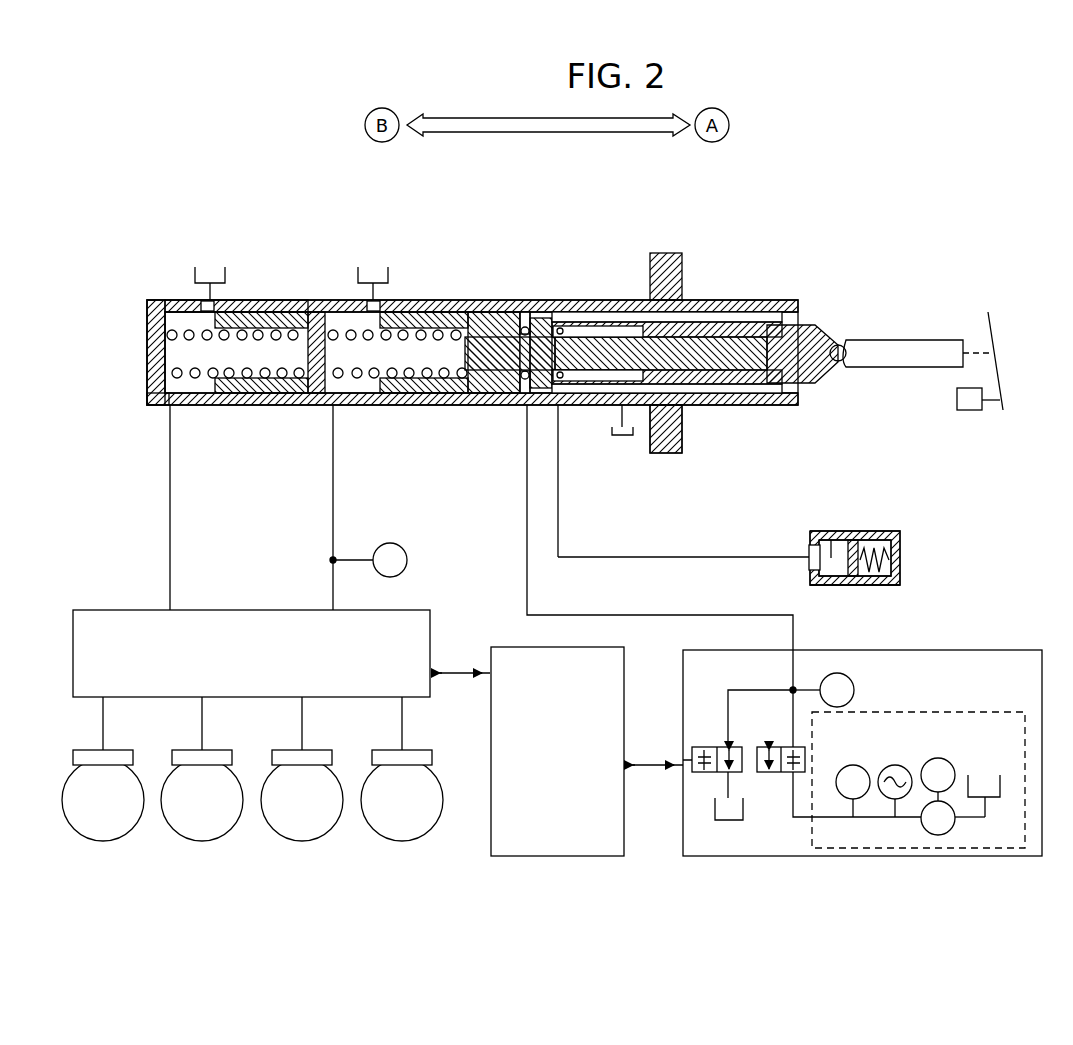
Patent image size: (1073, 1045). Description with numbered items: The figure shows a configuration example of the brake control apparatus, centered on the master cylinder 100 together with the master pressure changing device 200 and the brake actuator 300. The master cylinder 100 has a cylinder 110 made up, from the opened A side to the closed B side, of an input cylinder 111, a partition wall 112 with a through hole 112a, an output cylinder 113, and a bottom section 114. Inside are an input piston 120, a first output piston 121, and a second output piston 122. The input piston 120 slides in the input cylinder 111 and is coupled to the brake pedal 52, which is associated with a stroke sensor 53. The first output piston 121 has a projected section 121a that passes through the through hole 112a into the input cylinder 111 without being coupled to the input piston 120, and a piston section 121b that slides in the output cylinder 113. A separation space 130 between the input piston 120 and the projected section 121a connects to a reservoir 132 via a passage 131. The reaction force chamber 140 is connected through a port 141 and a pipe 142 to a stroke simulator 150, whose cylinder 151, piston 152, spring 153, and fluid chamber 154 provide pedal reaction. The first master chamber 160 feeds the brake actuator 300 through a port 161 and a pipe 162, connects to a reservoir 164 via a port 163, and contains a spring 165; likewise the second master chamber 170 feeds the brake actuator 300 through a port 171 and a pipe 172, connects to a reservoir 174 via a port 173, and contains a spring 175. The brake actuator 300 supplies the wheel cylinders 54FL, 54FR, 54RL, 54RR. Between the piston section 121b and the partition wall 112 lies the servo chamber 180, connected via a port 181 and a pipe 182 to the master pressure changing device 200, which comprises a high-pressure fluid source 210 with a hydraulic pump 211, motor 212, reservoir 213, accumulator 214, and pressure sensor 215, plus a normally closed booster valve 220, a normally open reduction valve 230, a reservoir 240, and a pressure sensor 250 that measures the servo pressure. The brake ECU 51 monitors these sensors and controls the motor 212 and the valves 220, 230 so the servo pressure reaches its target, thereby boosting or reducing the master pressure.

The master cylinder 100 is at (628, 256).
The cylinder 110 is at (747, 297).
The input cylinder 111 is at (708, 304).
The partition wall 112 is at (545, 318).
The through hole 112a is at (567, 326).
The output cylinder 113 is at (340, 299).
The bottom section 114 is at (147, 358).
The input piston 120 is at (828, 336).
The first output piston 121 is at (628, 197).
The projected section 121a is at (608, 350).
The piston section 121b is at (482, 330).
The second output piston 122 is at (266, 299).
The separation space 130 is at (797, 310).
The passage 131 is at (683, 425).
The reservoir 132 is at (623, 434).
The reaction force chamber 140 is at (593, 406).
The port 141 is at (563, 406).
The pipe 142 is at (560, 536).
The stroke simulator 150 is at (900, 562).
The cylinder 151 is at (870, 585).
The piston 152 is at (853, 532).
The spring 153 is at (885, 532).
The fluid chamber 154 is at (822, 533).
The first master chamber 160 is at (447, 406).
The port 161 is at (343, 406).
The pipe 162 is at (333, 519).
The port 163 is at (390, 298).
The reservoir 164 is at (392, 268).
The spring 165 is at (400, 406).
The second master chamber 170 is at (240, 406).
The port 171 is at (158, 406).
The pipe 172 is at (170, 525).
The port 173 is at (200, 300).
The reservoir 174 is at (197, 268).
The spring 175 is at (287, 406).
The servo chamber 180 is at (487, 406).
The port 181 is at (513, 406).
The pipe 182 is at (527, 574).
The master pressure changing device 200 is at (822, 857).
The high-pressure fluid source 210 is at (965, 712).
The hydraulic pump 211 is at (938, 836).
The motor 212 is at (926, 764).
The reservoir 213 is at (983, 777).
The accumulator 214 is at (897, 763).
The pressure sensor 215 is at (851, 765).
The booster valve 220 is at (777, 774).
The reduction valve 230 is at (712, 745).
The reservoir 240 is at (723, 822).
The pressure sensor 250 is at (835, 672).
The brake actuator 300 is at (120, 610).
The brake ECU 51 is at (545, 857).
The brake pedal 52 is at (993, 317).
The stroke sensor 53 is at (968, 412).
The wheel cylinder 54FL is at (118, 838).
The wheel cylinder 54FR is at (217, 838).
The wheel cylinder 54RL is at (317, 838).
The wheel cylinder 54RR is at (417, 838).